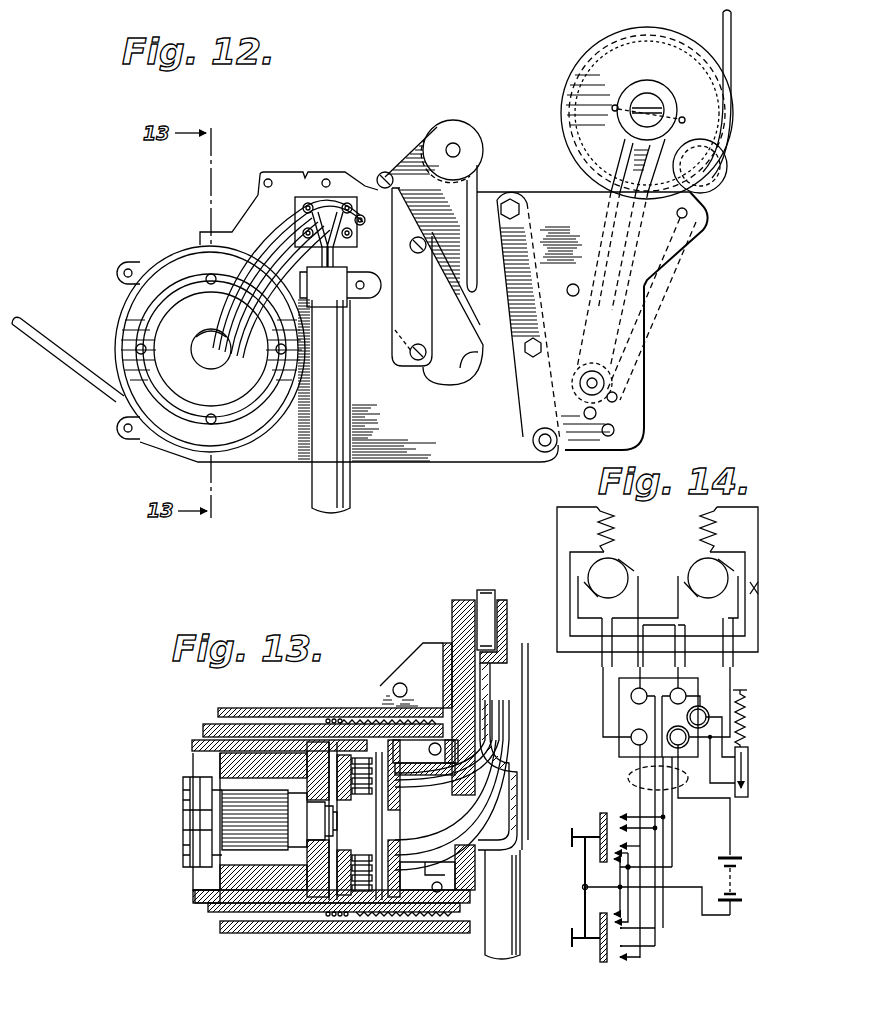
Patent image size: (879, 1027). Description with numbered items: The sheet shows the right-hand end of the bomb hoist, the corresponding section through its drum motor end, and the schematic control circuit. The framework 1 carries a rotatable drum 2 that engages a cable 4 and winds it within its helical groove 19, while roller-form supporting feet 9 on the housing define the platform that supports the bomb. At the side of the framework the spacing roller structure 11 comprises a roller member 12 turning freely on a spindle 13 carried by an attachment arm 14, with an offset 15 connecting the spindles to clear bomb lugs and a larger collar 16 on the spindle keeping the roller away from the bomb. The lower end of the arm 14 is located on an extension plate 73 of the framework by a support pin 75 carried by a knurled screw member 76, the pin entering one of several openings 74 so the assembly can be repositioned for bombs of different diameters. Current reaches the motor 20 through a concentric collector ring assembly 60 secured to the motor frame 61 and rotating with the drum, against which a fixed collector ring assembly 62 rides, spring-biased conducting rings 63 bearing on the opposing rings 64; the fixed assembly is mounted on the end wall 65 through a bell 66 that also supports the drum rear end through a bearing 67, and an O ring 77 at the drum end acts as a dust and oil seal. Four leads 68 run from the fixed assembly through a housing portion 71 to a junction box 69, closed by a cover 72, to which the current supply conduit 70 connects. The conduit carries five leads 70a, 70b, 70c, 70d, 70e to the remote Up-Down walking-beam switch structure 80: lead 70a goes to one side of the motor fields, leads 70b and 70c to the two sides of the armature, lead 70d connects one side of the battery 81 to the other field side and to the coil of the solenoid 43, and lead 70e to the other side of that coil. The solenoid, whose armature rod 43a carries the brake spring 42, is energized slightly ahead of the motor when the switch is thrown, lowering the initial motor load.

In FIG. 12, the framework 1 is at (460, 464).
In FIG. 13, the framework 1 is at (263, 706).
In FIG. 12, the rotatable drum 2 is at (116, 311).
In FIG. 13, the rotatable drum 2 is at (252, 938).
In FIG. 12, the cable 4 is at (70, 325).
In FIG. 13, the cable 4 is at (340, 722).
In FIG. 12, the supporting feet 9 is at (452, 130).
In FIG. 13, the supporting feet 9 is at (482, 592).
In FIG. 12, the roller structure 11 is at (557, 121).
In FIG. 12, the roller member 12 is at (577, 102).
In FIG. 12, the spindle 13 is at (662, 100).
In FIG. 12, the attachment arm 14 is at (622, 165).
In FIG. 12, the offset 15 is at (728, 180).
In FIG. 12, the collar 16 is at (605, 62).
In FIG. 13, the helical groove 19 is at (375, 738).
In FIG. 13, the motor 20 is at (180, 830).
In FIG. 14, the motor 20 is at (684, 566).
In FIG. 14, the spring 42 is at (744, 713).
In FIG. 14, the solenoid 43 is at (746, 766).
In FIG. 14, the armature rod 43a is at (740, 689).
In FIG. 13, the concentric collector ring assembly 60 is at (320, 893).
In FIG. 13, the motor frame 61 is at (302, 910).
In FIG. 13, the fixed collector ring assembly 62 is at (380, 898).
In FIG. 13, the conducting rings 63 is at (360, 885).
In FIG. 13, the opposing rings 64 is at (368, 882).
In FIG. 13, the end wall 65 is at (474, 868).
In FIG. 12, the bell 66 is at (208, 365).
In FIG. 13, the bell 66 is at (420, 872).
In FIG. 13, the bearing 67 is at (452, 748).
In FIG. 12, the leads 68 is at (273, 226).
In FIG. 13, the leads 68 is at (442, 836).
In FIG. 12, the junction box 69 is at (340, 205).
In FIG. 14, the junction box 69 is at (622, 720).
In FIG. 12, the current supply conduit 70 is at (334, 426).
In FIG. 13, the current supply conduit 70 is at (505, 912).
In FIG. 14, the current supply conduit 70 is at (640, 776).
In FIG. 14, the lead 70a is at (655, 806).
In FIG. 14, the lead 70b is at (672, 810).
In FIG. 14, the lead 70c is at (642, 795).
In FIG. 14, the lead 70d is at (680, 790).
In FIG. 14, the lead 70e is at (672, 832).
In FIG. 12, the housing portion 71 is at (473, 372).
In FIG. 13, the housing portion 71 is at (505, 740).
In FIG. 12, the cover 72 is at (404, 368).
In FIG. 13, the cover 72 is at (530, 702).
In FIG. 12, the extension plate 73 is at (633, 344).
In FIG. 12, the openings 74 is at (687, 222).
In FIG. 12, the support pin 75 is at (612, 383).
In FIG. 12, the knurled screw member 76 is at (618, 400).
In FIG. 13, the O ring 77 is at (456, 722).
In FIG. 14, the walking-beam switch structure 80 is at (580, 889).
In FIG. 14, the battery 81 is at (742, 887).